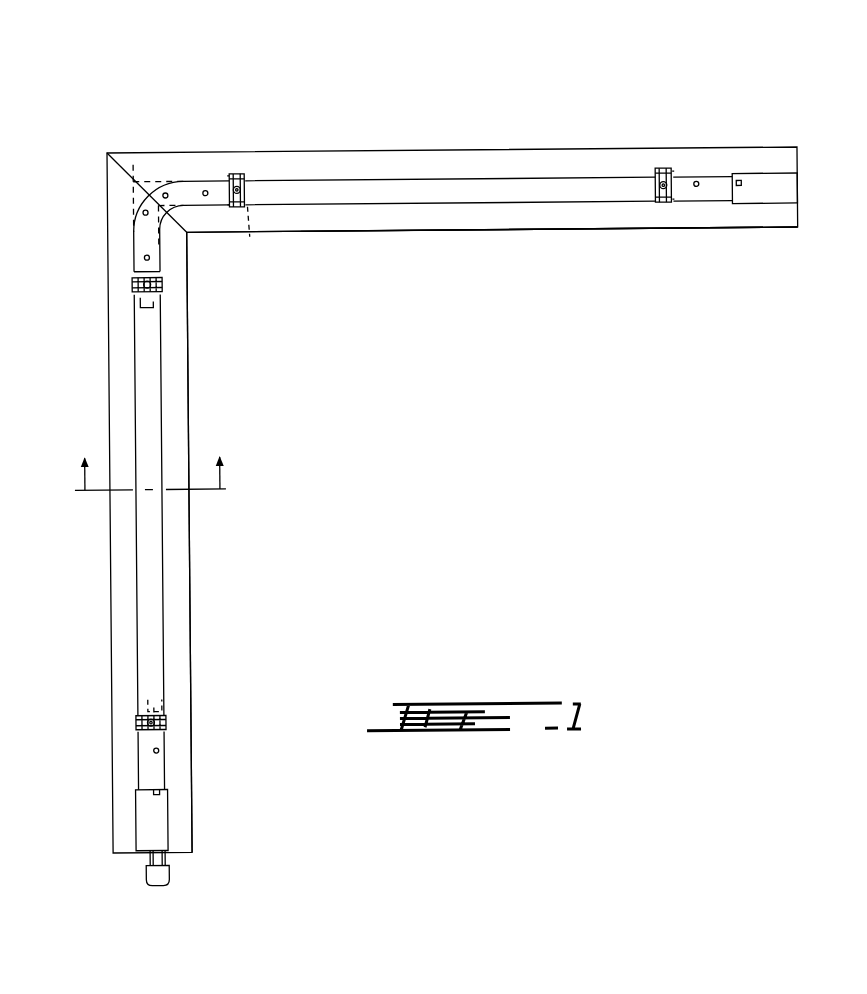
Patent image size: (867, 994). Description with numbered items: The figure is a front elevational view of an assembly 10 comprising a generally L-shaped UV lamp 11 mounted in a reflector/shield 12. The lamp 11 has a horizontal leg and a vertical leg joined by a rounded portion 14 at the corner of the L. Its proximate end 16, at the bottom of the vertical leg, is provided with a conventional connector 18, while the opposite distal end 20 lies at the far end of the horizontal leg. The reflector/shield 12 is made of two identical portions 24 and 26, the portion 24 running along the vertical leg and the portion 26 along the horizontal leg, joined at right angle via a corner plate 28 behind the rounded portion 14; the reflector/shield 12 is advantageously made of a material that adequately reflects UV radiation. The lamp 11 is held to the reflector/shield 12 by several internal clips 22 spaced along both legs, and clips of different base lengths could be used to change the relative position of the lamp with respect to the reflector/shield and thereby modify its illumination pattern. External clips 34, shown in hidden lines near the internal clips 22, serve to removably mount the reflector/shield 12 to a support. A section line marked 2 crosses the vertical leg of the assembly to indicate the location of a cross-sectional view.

The assembly 10 is at (377, 146).
The UV lamp 11 is at (431, 178).
The reflector/shield 12 is at (508, 238).
The rounded portion 14 is at (183, 240).
The proximate end 16 is at (176, 801).
The connector 18 is at (158, 836).
The distal end 20 is at (751, 172).
The internal clips 22 is at (230, 176).
The portion of reflector/shield 24 is at (170, 386).
The portion of reflector/shield 26 is at (332, 222).
The corner plate 28 is at (150, 176).
The external clip 34 is at (657, 172).
The section line 2- 2 is at (146, 488).